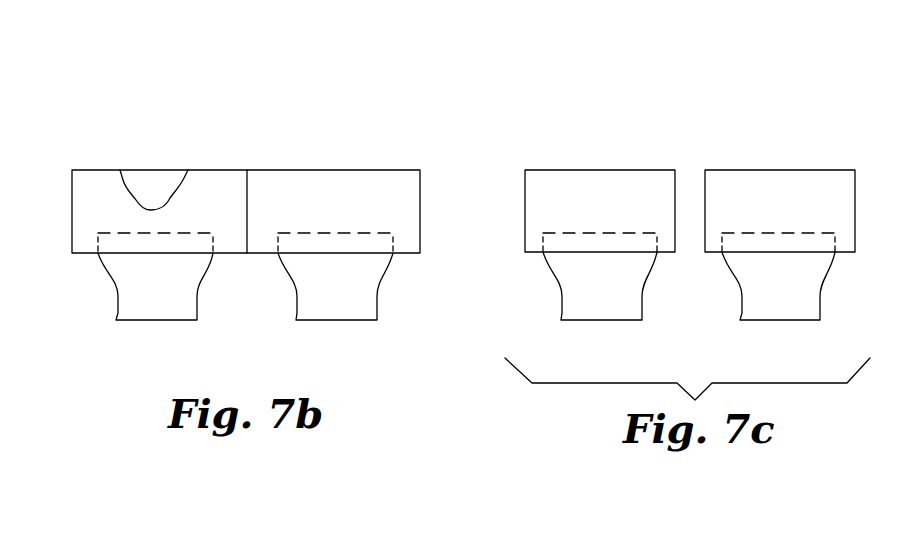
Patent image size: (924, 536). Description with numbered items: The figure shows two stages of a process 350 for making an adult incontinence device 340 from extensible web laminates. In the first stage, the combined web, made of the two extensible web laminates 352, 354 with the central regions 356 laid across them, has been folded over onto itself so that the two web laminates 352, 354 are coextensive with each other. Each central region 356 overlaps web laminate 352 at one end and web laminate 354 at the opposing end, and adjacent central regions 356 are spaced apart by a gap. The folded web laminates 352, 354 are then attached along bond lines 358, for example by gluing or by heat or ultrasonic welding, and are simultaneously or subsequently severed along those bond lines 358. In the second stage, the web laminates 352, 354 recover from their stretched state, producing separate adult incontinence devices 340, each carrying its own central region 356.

In FIG. 7C, the adult incontinence device 340 is at (568, 158).
In FIG. 7B, the process 350 is at (365, 103).
In FIG. 7C, the process 350 is at (825, 103).
In FIG. 7B, the extensible web laminate 352 is at (155, 180).
In FIG. 7B, the extensible web laminate 354 is at (310, 188).
In FIG. 7B, the central region 356 is at (310, 307).
In FIG. 7C, the central region 356 is at (752, 290).
In FIG. 7B, the bond lines 358 is at (72, 170).